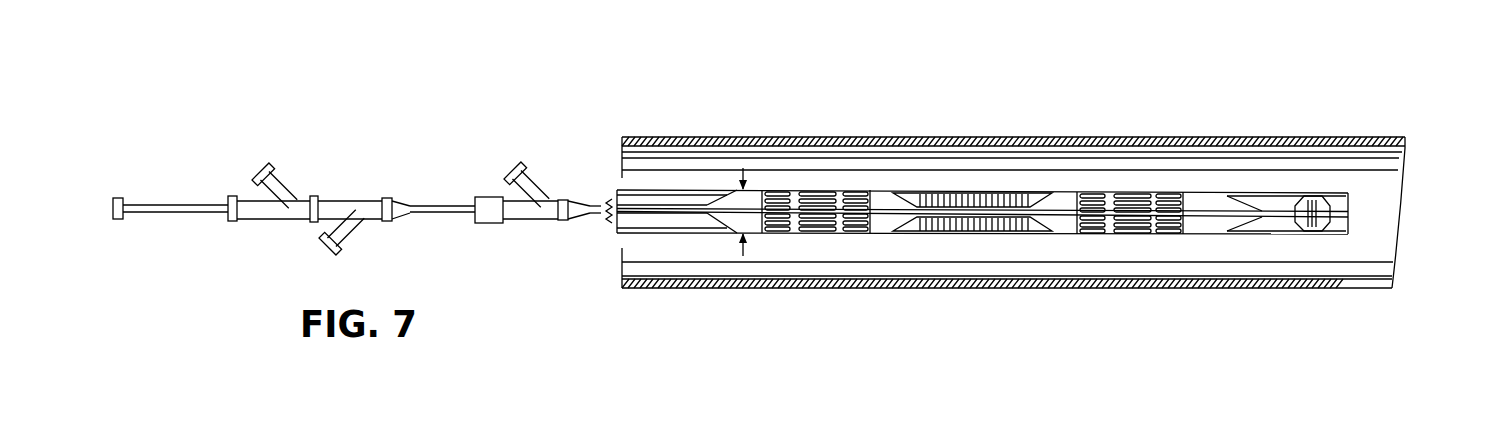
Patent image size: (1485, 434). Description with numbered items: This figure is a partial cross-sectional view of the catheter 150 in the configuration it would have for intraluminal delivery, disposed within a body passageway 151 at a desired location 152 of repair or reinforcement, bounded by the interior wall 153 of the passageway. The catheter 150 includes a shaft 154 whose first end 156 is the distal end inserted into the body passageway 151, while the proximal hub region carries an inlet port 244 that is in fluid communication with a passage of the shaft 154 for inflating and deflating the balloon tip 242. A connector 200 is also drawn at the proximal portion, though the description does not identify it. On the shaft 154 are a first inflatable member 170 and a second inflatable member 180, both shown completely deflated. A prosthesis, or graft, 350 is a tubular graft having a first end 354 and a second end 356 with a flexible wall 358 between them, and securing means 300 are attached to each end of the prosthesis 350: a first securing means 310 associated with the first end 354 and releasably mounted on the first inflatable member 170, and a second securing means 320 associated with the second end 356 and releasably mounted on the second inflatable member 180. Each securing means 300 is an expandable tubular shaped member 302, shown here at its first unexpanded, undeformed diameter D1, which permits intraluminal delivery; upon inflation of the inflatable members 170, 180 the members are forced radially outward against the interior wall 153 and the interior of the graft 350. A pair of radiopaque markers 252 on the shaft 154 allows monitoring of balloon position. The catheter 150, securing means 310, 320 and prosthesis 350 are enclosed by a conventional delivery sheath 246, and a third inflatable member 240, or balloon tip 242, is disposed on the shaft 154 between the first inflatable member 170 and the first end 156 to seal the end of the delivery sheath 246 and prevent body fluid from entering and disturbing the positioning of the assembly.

The catheter 150 is at (317, 163).
The inlet port 244 is at (256, 168).
The shaft 154 is at (438, 205).
The connector 200 is at (538, 227).
The body passageway 151 is at (1338, 138).
The desired location 152 is at (983, 150).
The interior wall 153 is at (648, 157).
The second inflatable member 180 is at (732, 232).
The second securing means 320 is at (757, 232).
The radiopaque markers 252 is at (1060, 217).
The first diameter D1 is at (743, 197).
The securing means 300 is at (1009, 224).
The first securing means 310 is at (1182, 190).
The expandable tubular shaped member 302 is at (970, 289).
The second end 356 is at (831, 243).
The first end 354 is at (1128, 238).
The prosthesis 350 is at (996, 186).
The flexible wall 358 is at (1000, 237).
The first inflatable member 170 is at (1220, 238).
The delivery sheath 246 is at (1258, 237).
The balloon tip 242 is at (1316, 197).
The third inflatable member 240 is at (1331, 238).
The first end 156 is at (1358, 198).